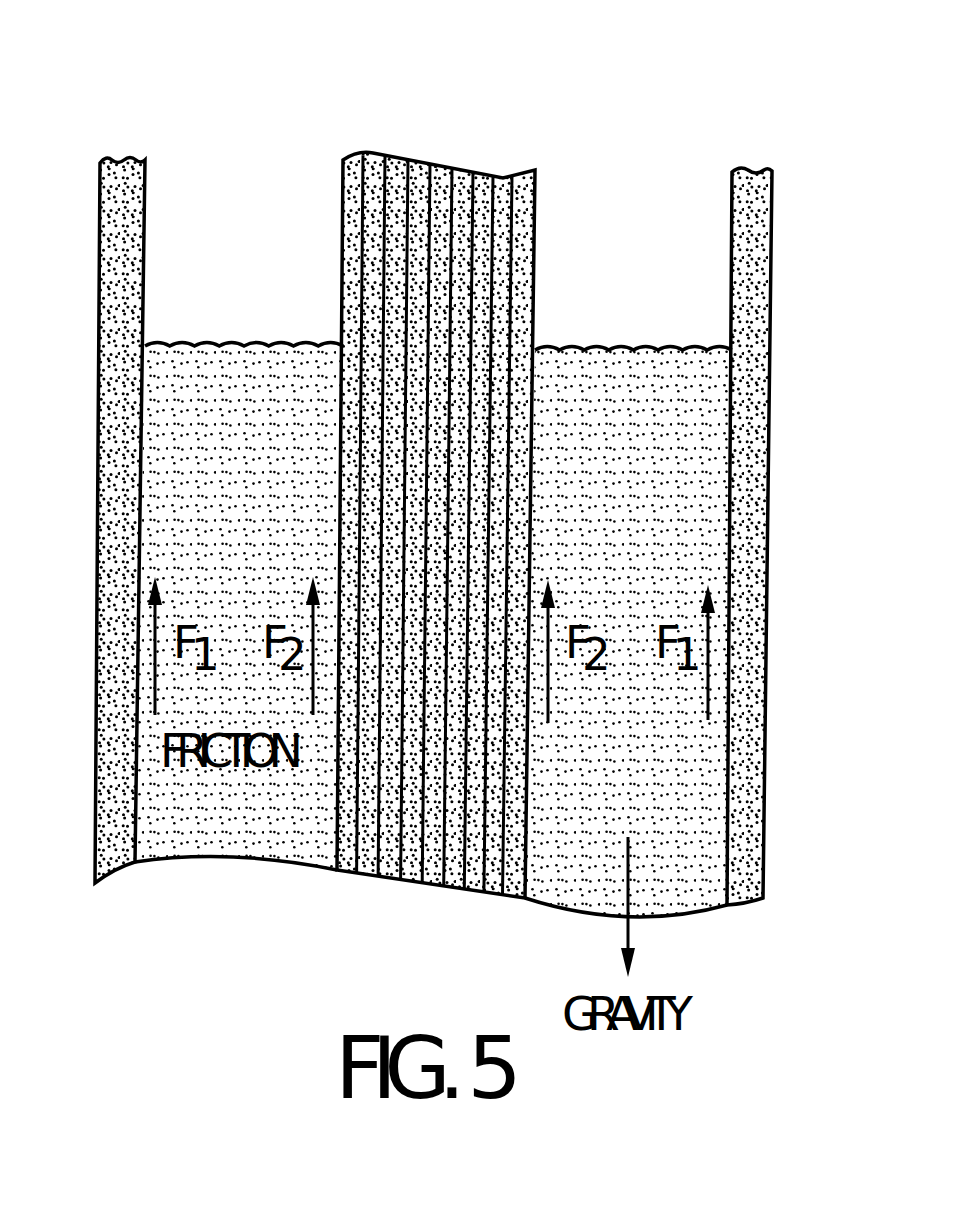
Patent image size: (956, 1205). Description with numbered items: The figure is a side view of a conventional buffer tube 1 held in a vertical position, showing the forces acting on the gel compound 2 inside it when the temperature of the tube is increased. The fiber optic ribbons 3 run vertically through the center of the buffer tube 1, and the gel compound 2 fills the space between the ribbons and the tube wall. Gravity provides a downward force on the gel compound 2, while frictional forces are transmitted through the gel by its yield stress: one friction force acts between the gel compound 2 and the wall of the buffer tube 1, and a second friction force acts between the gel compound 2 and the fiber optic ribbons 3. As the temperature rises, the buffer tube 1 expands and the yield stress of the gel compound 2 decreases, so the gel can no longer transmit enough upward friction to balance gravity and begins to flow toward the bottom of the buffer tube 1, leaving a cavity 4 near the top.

The buffer tube 1 is at (767, 293).
The gel compound 2 is at (640, 378).
The fiber optic ribbons 3 is at (500, 190).
The cavity 4 is at (700, 238).